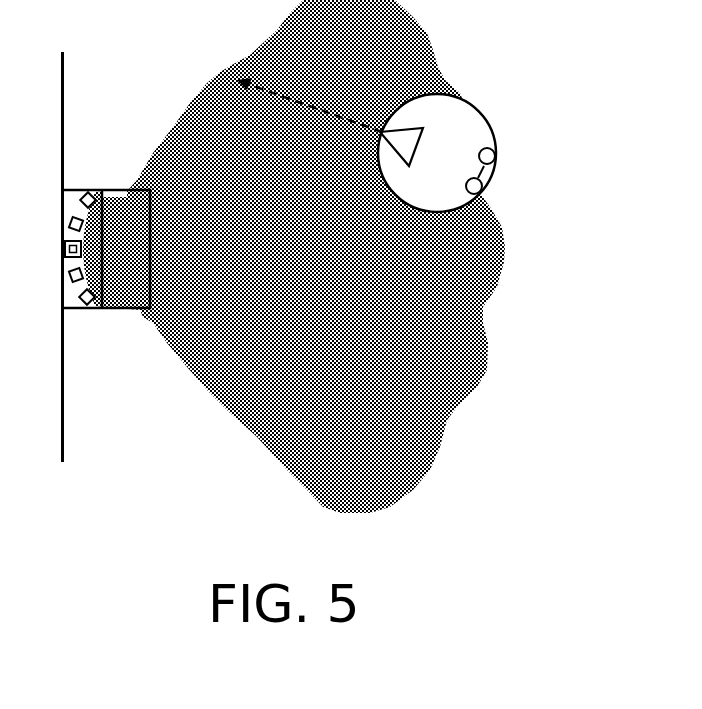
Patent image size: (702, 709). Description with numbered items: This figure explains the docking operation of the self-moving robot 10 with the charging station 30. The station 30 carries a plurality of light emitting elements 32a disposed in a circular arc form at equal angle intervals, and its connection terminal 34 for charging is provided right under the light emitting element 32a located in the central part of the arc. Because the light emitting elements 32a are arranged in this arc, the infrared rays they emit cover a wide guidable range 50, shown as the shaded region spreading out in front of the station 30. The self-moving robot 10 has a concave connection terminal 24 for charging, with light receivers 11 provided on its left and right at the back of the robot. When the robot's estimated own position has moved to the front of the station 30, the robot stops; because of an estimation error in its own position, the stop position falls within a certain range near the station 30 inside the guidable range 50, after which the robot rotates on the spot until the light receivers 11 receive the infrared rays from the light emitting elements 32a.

The self-moving robot 10 is at (453, 116).
The light receivers 11 is at (494, 155).
The connection terminal 24 is at (490, 175).
The station 30 is at (121, 173).
The light emitting elements 32a is at (88, 197).
The connection terminal 34 is at (67, 262).
The guidable range 50 is at (463, 375).